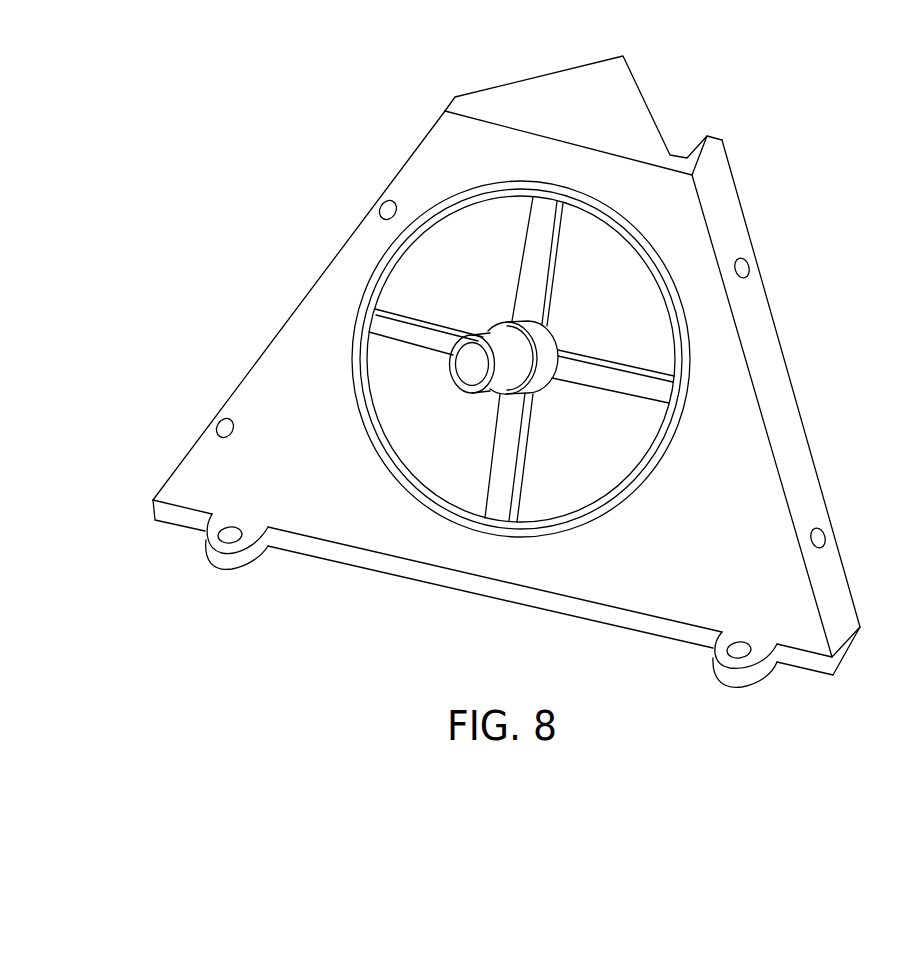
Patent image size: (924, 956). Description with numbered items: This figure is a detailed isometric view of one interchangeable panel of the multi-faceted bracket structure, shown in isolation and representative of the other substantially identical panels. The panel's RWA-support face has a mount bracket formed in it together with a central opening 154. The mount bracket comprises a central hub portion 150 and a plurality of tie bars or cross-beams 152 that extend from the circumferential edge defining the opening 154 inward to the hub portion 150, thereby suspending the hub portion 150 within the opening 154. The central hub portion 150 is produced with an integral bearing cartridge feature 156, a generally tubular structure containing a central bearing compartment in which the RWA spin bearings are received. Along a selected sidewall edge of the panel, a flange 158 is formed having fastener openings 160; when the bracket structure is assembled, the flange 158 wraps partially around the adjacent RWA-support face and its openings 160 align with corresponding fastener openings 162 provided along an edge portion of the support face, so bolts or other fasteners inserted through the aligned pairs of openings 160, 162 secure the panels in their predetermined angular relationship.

The central hub portion 150 is at (540, 328).
The tie bars or cross-beams 152 is at (526, 236).
The central opening 154 is at (632, 440).
The integral bearing cartridge feature 156 is at (478, 396).
The flange 158 is at (797, 397).
The fastener opening 160 is at (752, 264).
The fastener opening 162 is at (380, 209).